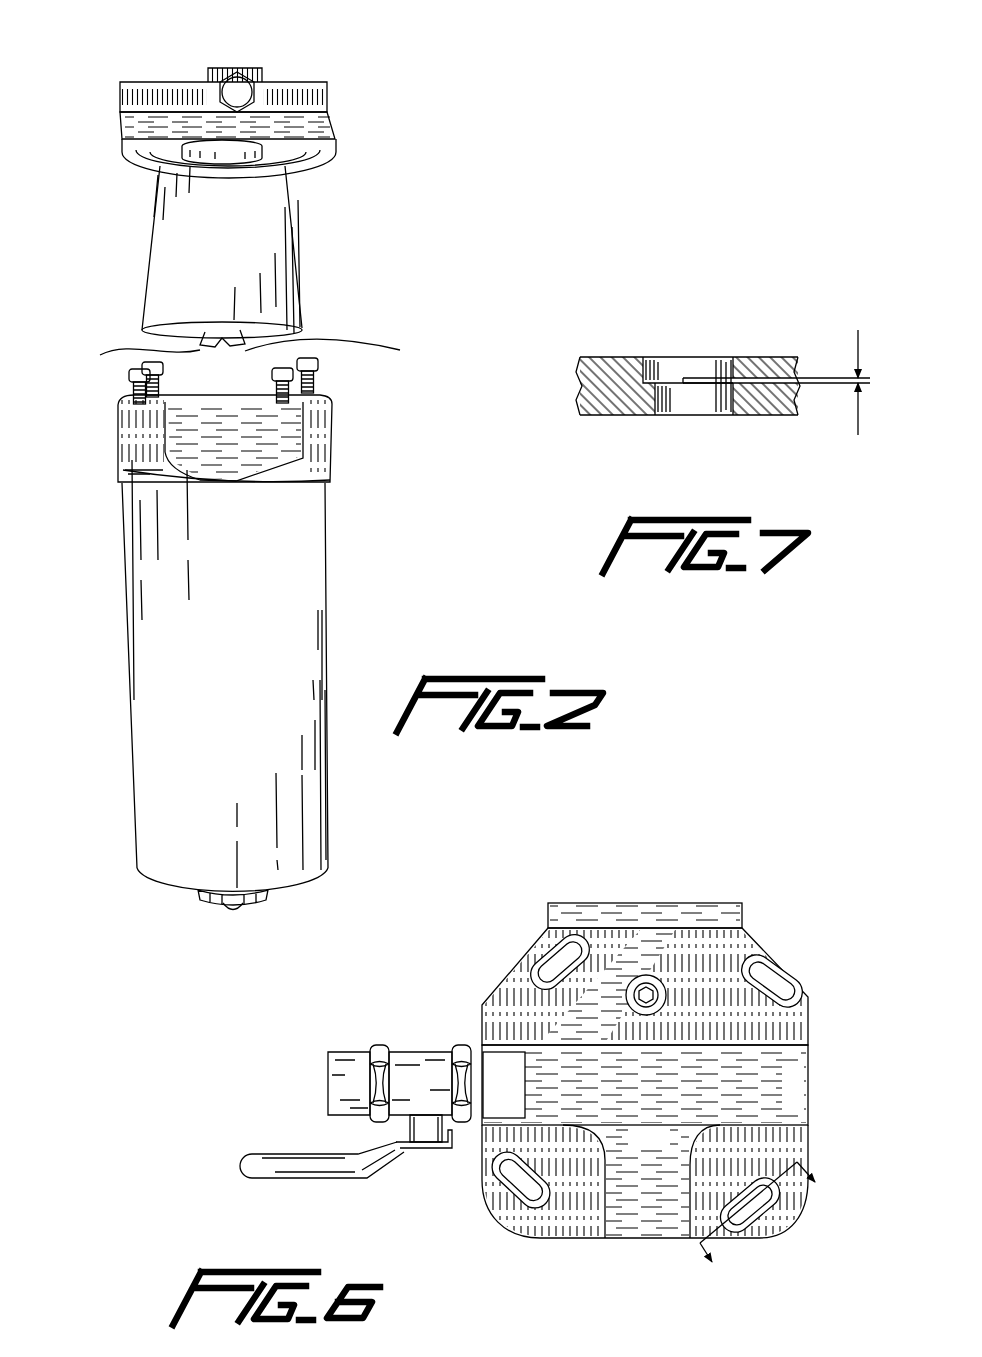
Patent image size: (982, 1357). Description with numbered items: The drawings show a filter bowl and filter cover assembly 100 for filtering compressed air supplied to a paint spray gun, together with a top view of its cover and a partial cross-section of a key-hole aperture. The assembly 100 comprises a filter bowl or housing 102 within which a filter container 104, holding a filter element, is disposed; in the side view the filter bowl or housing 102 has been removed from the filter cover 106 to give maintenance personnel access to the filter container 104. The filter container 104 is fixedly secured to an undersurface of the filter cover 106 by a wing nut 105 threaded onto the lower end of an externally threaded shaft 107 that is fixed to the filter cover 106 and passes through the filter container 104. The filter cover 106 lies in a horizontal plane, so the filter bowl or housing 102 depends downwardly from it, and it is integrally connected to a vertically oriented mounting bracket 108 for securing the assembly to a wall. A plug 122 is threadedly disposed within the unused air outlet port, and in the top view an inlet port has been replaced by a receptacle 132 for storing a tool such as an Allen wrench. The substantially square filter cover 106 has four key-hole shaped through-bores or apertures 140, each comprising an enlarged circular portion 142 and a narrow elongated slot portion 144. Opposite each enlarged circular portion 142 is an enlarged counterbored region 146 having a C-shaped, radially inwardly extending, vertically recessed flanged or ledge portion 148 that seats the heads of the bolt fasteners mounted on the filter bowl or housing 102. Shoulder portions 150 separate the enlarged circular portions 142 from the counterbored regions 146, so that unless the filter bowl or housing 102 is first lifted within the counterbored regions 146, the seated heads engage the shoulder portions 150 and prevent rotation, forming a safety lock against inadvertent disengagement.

In FIG. 2, the filter bowl and filter cover assembly 100 is at (400, 118).
In FIG. 6, the filter bowl and filter cover assembly 100 is at (805, 866).
In FIG. 2, the filter bowl or housing 102 is at (328, 638).
In FIG. 2, the filter container 104 is at (257, 247).
In FIG. 2, the wing nut 105 is at (341, 356).
In FIG. 2, the filter cover 106 is at (126, 130).
In FIG. 6, the filter cover 106 is at (667, 1146).
In FIG. 2, the externally threaded shaft 107 is at (108, 354).
In FIG. 6, the mounting bracket 108 is at (646, 905).
In FIG. 2, the plug 122 is at (236, 88).
In FIG. 6, the receptacle 132 is at (653, 980).
In FIG. 6, the key-hole shaped through-bores or apertures 140 is at (578, 975).
In FIG. 7, the enlarged circular portions 142 is at (706, 365).
In FIG. 6, the enlarged circular portions 142 is at (552, 946).
In FIG. 6, the elongated slot portions 144 is at (548, 952).
In FIG. 7, the counterbored regions 146 is at (667, 408).
In FIG. 6, the counterbored regions 146 is at (525, 990).
In FIG. 7, the flanged or ledge portion 148 is at (663, 386).
In FIG. 6, the flanged or ledge portion 148 is at (532, 992).
In FIG. 7, the shoulder portions 150 is at (693, 388).
In FIG. 6, the shoulder portions 150 is at (587, 980).